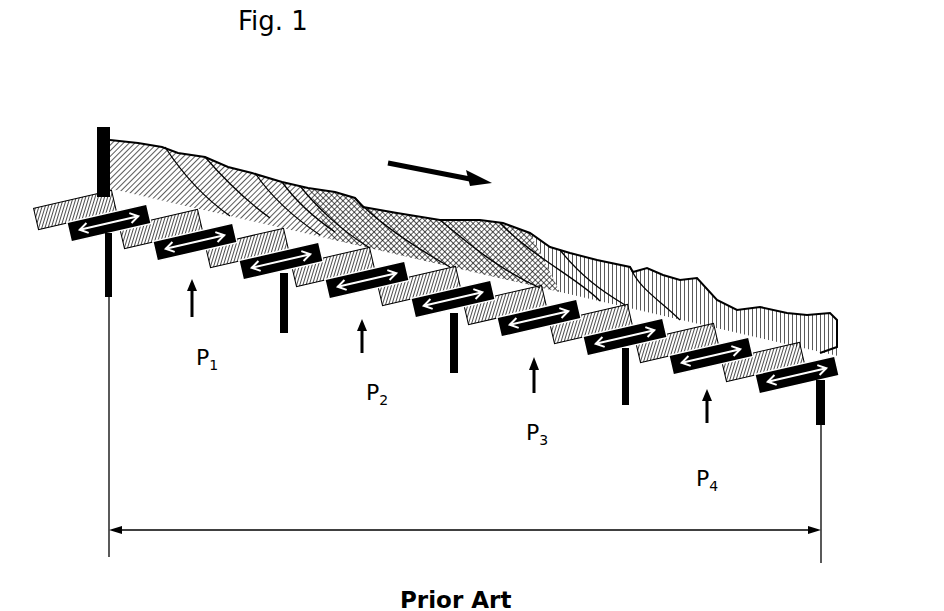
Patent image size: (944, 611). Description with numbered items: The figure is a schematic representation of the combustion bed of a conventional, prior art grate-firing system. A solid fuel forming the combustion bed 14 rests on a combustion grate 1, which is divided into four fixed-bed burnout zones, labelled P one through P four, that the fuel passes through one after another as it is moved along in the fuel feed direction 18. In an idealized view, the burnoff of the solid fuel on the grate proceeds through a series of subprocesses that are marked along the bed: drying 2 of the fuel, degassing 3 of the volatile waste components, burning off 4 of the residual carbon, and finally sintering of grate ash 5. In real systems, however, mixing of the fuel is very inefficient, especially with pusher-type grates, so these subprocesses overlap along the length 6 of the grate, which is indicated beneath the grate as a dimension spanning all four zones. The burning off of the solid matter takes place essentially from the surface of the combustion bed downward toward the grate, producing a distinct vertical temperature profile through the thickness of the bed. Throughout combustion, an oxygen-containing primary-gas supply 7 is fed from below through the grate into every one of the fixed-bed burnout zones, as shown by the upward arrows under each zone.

The combustion grate 1 is at (743, 377).
The drying 2 is at (178, 152).
The degassing 3 is at (295, 185).
The burning off 4 is at (557, 240).
The sintering of grate ash 5 is at (658, 288).
The length of the grate 6 is at (465, 431).
The primary-gas supply 7 is at (192, 303).
The combustion bed 14 is at (257, 175).
The fuel feed direction 18 is at (430, 165).